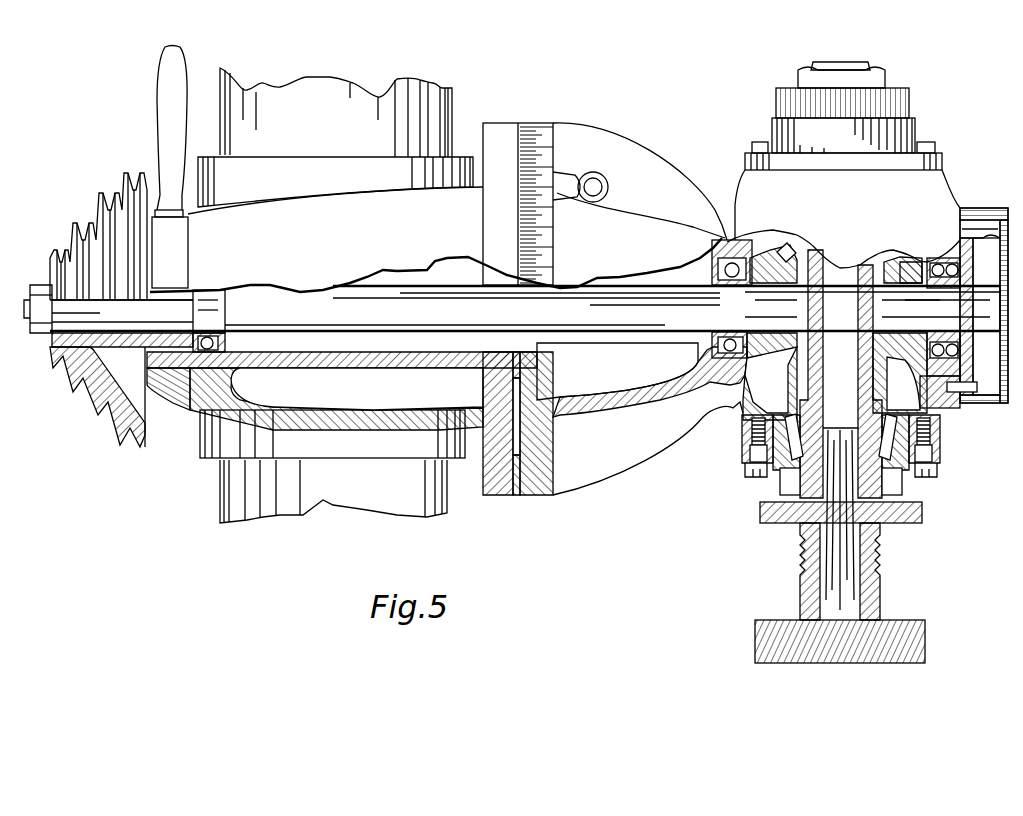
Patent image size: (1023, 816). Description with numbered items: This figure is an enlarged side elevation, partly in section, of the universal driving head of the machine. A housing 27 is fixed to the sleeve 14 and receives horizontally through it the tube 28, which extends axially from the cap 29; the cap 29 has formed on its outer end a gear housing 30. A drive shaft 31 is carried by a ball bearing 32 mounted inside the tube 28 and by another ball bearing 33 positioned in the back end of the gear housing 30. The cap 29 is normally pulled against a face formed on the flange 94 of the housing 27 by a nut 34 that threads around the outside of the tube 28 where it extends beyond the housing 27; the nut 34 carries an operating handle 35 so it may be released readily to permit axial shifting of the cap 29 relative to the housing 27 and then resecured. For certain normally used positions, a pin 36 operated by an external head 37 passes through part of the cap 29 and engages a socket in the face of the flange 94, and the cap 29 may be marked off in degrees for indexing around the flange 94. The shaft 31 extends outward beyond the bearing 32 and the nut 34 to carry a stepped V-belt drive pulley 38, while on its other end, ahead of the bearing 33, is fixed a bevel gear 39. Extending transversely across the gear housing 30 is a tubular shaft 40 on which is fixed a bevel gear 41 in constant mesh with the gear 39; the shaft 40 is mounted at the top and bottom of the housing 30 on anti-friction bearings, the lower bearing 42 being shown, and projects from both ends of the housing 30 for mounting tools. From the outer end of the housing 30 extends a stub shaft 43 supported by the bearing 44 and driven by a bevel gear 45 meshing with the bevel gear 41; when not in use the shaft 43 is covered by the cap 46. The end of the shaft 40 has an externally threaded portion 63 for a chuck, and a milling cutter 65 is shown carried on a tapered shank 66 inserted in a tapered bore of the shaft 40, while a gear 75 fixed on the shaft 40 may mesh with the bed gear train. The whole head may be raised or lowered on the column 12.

The column 12 is at (430, 108).
The sleeve 14 is at (290, 165).
The housing 27 is at (436, 239).
The tube 28 is at (298, 360).
The cap 29 is at (543, 495).
The gear housing 30 is at (752, 185).
The drive shaft 31 is at (570, 305).
The ball bearing 32 is at (230, 345).
The ball bearing 33 is at (715, 258).
The nut 34 is at (170, 252).
The operating handle 35 is at (165, 108).
The pin 36 is at (518, 195).
The external head 37 is at (606, 175).
The stepped V-belt drive pulley 38 is at (97, 412).
The bevel gear 39 is at (790, 255).
The tubular shaft 40 is at (841, 374).
The bevel gear 41 is at (795, 384).
The lower bearing 42 is at (937, 455).
The stub shaft 43 is at (936, 312).
The bearing 44 is at (955, 262).
The bevel gear 45 is at (893, 265).
The cap 46 is at (968, 208).
The externally threaded portion 63 is at (882, 548).
The milling cutter 65 is at (853, 663).
The tapered shank 66 is at (835, 580).
The gear 75 is at (905, 105).
The flange 94 is at (503, 495).